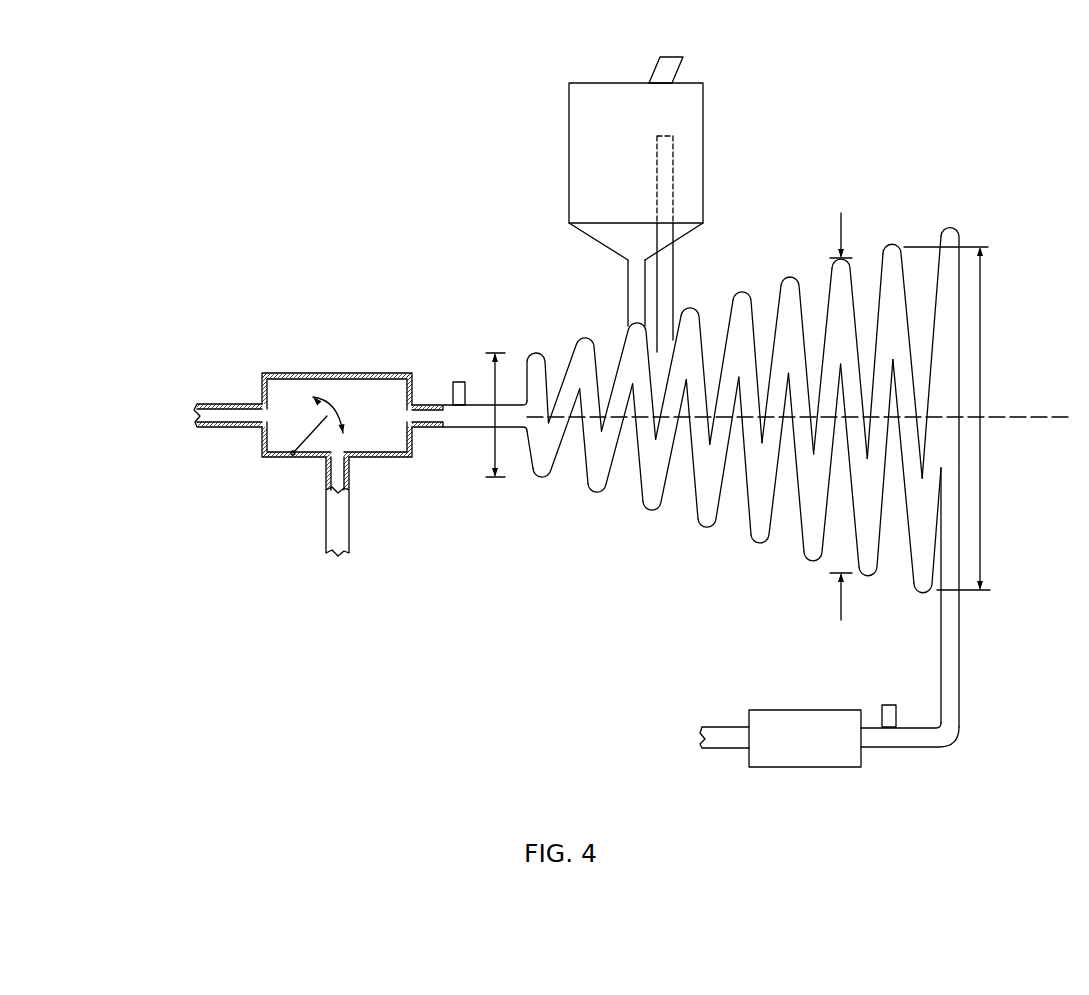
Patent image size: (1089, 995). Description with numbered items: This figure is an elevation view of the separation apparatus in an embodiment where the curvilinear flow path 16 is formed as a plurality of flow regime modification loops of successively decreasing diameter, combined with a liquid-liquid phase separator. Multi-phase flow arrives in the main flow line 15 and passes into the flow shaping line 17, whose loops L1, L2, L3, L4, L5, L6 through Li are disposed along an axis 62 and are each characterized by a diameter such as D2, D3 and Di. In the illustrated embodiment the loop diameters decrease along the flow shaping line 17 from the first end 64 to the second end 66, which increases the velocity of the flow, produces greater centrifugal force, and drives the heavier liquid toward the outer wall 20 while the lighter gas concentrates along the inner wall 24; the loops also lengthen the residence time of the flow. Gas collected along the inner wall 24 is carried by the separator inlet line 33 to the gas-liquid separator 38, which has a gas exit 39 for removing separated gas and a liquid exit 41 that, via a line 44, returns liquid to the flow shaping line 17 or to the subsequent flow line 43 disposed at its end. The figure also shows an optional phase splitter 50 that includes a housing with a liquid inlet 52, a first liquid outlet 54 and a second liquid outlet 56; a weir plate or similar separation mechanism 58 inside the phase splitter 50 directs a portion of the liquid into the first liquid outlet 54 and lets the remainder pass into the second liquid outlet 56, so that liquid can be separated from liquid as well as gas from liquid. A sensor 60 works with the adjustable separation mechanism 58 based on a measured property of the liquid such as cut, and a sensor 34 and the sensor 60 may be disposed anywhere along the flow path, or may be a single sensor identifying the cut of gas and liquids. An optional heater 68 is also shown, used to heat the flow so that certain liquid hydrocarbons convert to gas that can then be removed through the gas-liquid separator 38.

The main flow line 15 is at (728, 727).
The curvilinear flow path 16 is at (940, 275).
The flow shaping line 17 is at (792, 253).
The outer wall 20 is at (597, 474).
The inner wall 24 is at (617, 458).
The separator inlet line 33 is at (673, 268).
The sensor 34 is at (887, 704).
The gas-liquid separator 38 is at (569, 121).
The gas exit 39 is at (653, 67).
The liquid exit 41 is at (632, 252).
The subsequent flow line 43 is at (437, 425).
The line 44 is at (628, 305).
The phase splitter 50 is at (249, 346).
The liquid inlet 52 is at (410, 414).
The first liquid outlet 54 is at (332, 477).
The second liquid outlet 56 is at (260, 413).
The separation mechanism 58 is at (295, 435).
The sensor 60 is at (457, 382).
The axis 62 is at (1017, 420).
The first end 64 is at (722, 748).
The second end 66 is at (525, 384).
The heater 68 is at (782, 710).
The first loop L1 is at (951, 227).
The loop L2 is at (923, 593).
The loop L3 is at (868, 578).
The loop L4 is at (813, 563).
The loop L5 is at (758, 545).
The loop L6 is at (705, 528).
The loop Li is at (540, 474).
The loop diameter Di is at (492, 442).
The loop diameter D2 is at (982, 364).
The loop diameter D3 is at (841, 607).